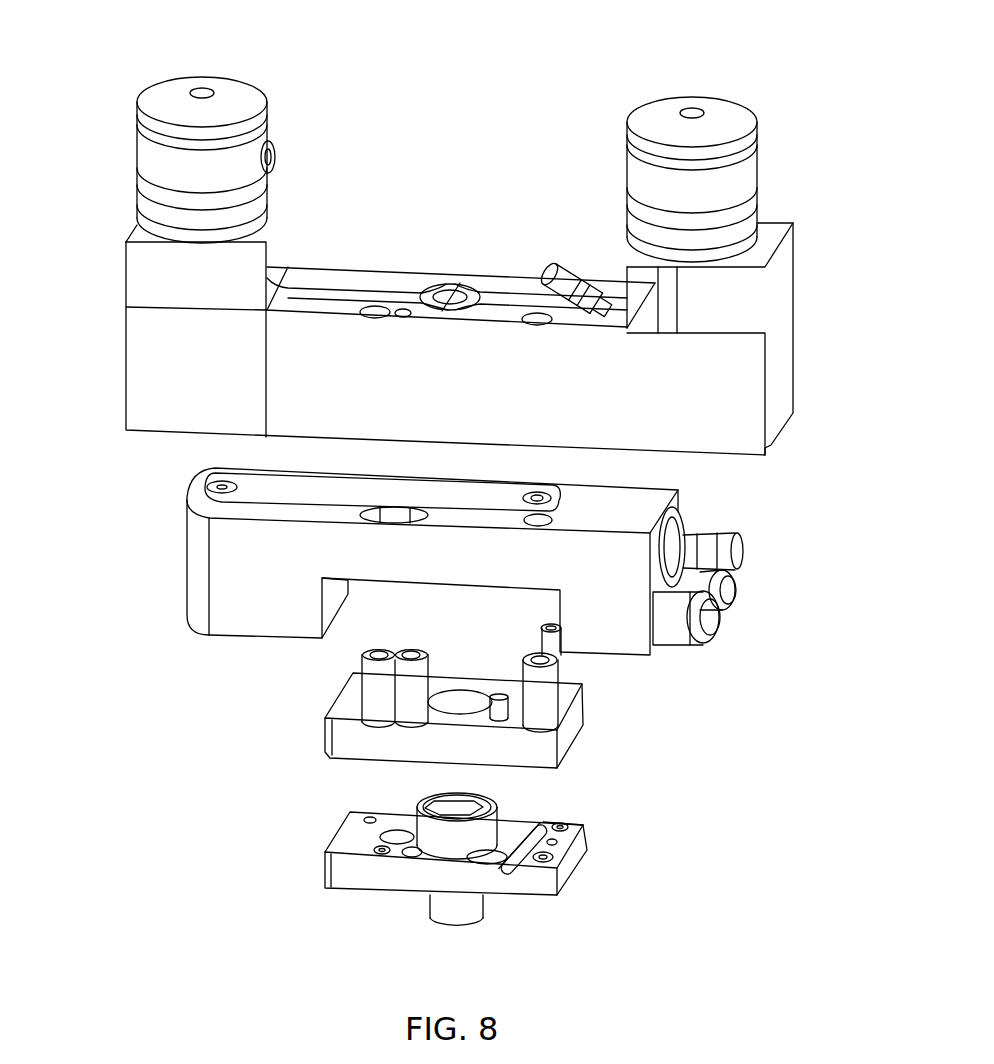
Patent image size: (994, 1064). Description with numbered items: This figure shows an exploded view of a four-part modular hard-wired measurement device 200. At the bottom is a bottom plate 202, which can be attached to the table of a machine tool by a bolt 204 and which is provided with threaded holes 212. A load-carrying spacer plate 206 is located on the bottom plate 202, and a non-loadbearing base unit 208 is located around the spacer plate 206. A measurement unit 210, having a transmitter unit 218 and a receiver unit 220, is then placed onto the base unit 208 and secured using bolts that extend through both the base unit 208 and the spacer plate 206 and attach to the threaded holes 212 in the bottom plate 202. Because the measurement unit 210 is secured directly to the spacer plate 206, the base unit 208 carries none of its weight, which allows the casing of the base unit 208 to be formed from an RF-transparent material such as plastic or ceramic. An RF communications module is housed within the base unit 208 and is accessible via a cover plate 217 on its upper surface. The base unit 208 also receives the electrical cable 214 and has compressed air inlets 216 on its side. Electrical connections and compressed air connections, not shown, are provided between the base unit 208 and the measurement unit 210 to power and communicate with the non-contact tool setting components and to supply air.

The four-part modular hard-wired measurement device 200 is at (475, 493).
The bottom plate 202 is at (577, 850).
The bolt 204 is at (470, 913).
The load-carrying spacer plate 206 is at (573, 727).
The non-loadbearing base unit 208 is at (391, 523).
The measurement unit 210 is at (157, 392).
The threaded holes 212 is at (382, 857).
The electrical cable 214 is at (707, 532).
The compressed air inlets 216 is at (680, 620).
The cover plate 217 is at (347, 492).
The transmitter unit 218 is at (242, 97).
The receiver unit 220 is at (725, 113).